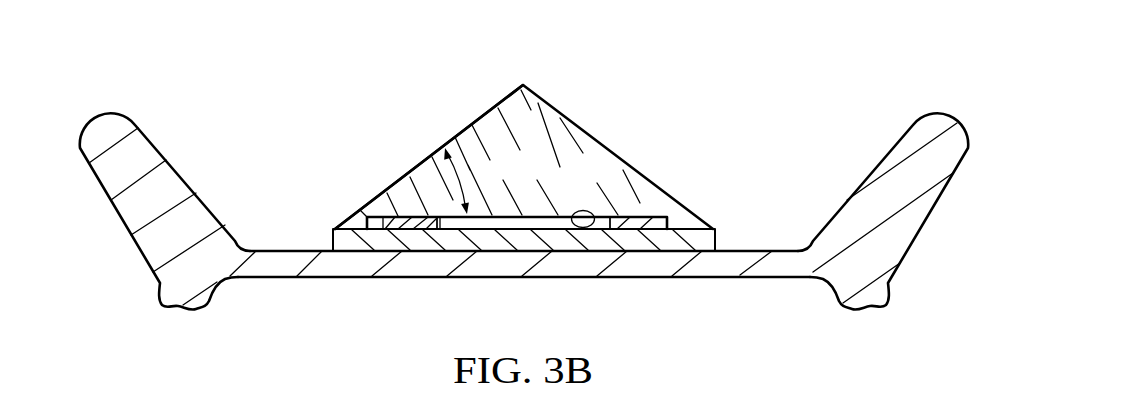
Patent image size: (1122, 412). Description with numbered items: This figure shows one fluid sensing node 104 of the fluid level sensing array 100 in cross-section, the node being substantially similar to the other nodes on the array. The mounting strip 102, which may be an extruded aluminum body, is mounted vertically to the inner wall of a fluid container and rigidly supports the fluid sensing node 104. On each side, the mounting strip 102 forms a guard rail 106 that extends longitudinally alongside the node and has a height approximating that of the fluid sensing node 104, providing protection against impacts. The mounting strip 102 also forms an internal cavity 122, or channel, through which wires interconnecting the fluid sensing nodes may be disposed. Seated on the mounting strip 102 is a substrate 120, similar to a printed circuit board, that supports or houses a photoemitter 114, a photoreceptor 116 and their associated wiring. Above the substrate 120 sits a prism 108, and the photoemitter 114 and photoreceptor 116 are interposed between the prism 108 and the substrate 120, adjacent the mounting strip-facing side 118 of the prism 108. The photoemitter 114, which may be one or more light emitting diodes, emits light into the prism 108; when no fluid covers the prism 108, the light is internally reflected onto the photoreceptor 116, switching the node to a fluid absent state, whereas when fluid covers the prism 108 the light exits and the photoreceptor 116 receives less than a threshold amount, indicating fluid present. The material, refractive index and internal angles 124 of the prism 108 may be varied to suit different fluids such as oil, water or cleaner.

The fluid level sensing array 100 is at (246, 62).
The mounting strip 102 is at (287, 251).
The fluid sensing node 104 is at (560, 94).
The guard rail 106 is at (111, 112).
The prism 108 is at (485, 113).
The photoemitter 114 is at (416, 226).
The photoreceptor 116 is at (653, 220).
The mounting strip-facing side 118 is at (577, 211).
The substrate 120 is at (715, 242).
The internal cavity 122 is at (275, 278).
The internal angles 124 is at (468, 178).